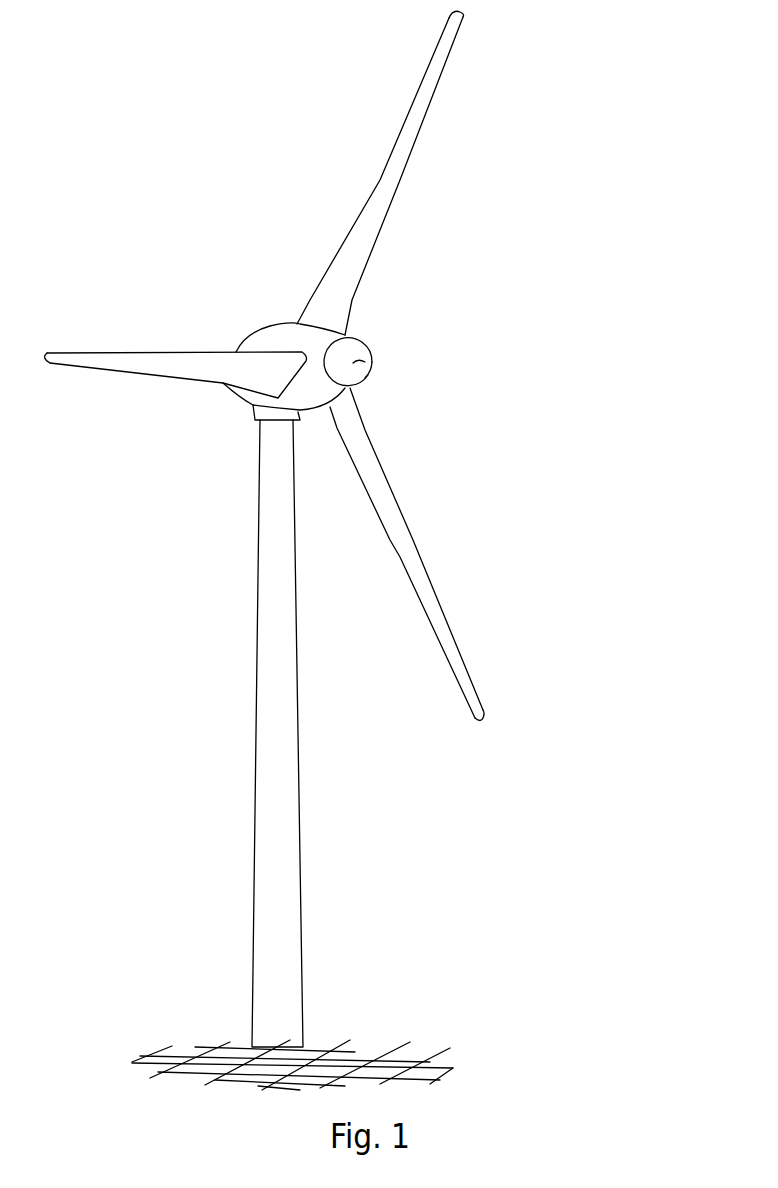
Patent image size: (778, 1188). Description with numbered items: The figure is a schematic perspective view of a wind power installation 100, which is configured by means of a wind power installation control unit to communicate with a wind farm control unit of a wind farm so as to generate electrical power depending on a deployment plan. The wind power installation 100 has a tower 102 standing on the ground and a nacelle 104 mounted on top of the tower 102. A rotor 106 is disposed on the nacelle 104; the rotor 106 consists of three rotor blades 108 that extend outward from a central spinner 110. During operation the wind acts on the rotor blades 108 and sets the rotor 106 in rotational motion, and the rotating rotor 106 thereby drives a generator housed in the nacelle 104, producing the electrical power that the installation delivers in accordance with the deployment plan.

The wind power installation 100 is at (308, 550).
The tower 102 is at (283, 832).
The nacelle 104 is at (272, 342).
The rotor 106 is at (308, 365).
The rotor blades 108 is at (410, 137).
The spinner 110 is at (365, 362).